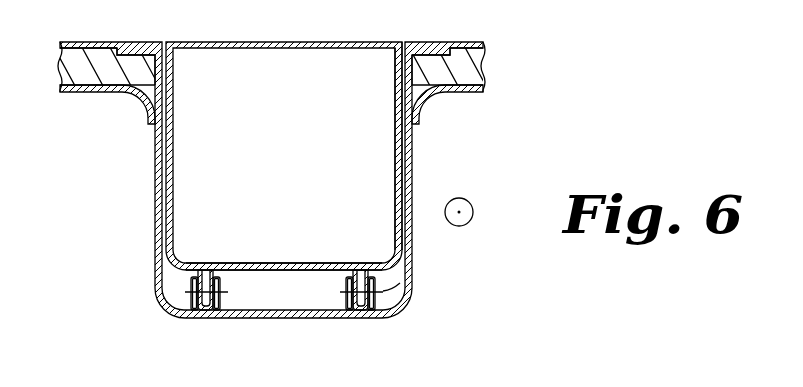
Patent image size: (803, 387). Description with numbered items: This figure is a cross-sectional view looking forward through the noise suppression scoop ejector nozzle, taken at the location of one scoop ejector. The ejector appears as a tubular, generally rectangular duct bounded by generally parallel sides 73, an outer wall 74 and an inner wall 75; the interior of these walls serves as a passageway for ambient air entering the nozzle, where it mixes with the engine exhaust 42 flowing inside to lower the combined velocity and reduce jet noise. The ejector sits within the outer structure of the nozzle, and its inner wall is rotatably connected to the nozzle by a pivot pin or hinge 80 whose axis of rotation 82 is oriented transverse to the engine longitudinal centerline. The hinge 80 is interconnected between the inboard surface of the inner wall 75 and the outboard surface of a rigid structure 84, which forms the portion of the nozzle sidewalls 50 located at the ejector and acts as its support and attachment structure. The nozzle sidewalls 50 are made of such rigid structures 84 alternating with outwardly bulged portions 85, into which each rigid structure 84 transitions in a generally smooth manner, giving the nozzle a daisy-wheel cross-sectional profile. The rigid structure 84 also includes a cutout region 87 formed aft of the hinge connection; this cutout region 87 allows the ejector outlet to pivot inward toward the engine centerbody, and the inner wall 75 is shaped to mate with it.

The engine exhaust 42 is at (470, 218).
The nozzle sidewall 50 is at (452, 93).
The side 73 is at (395, 166).
The outer wall 74 is at (252, 48).
The inner wall 75 is at (277, 263).
The hinge 80 is at (180, 280).
The axis of rotation 82 is at (405, 292).
The rigid structure 84 is at (155, 227).
The outwardly bulged portion 85 is at (110, 88).
The cutout region 87 is at (403, 287).